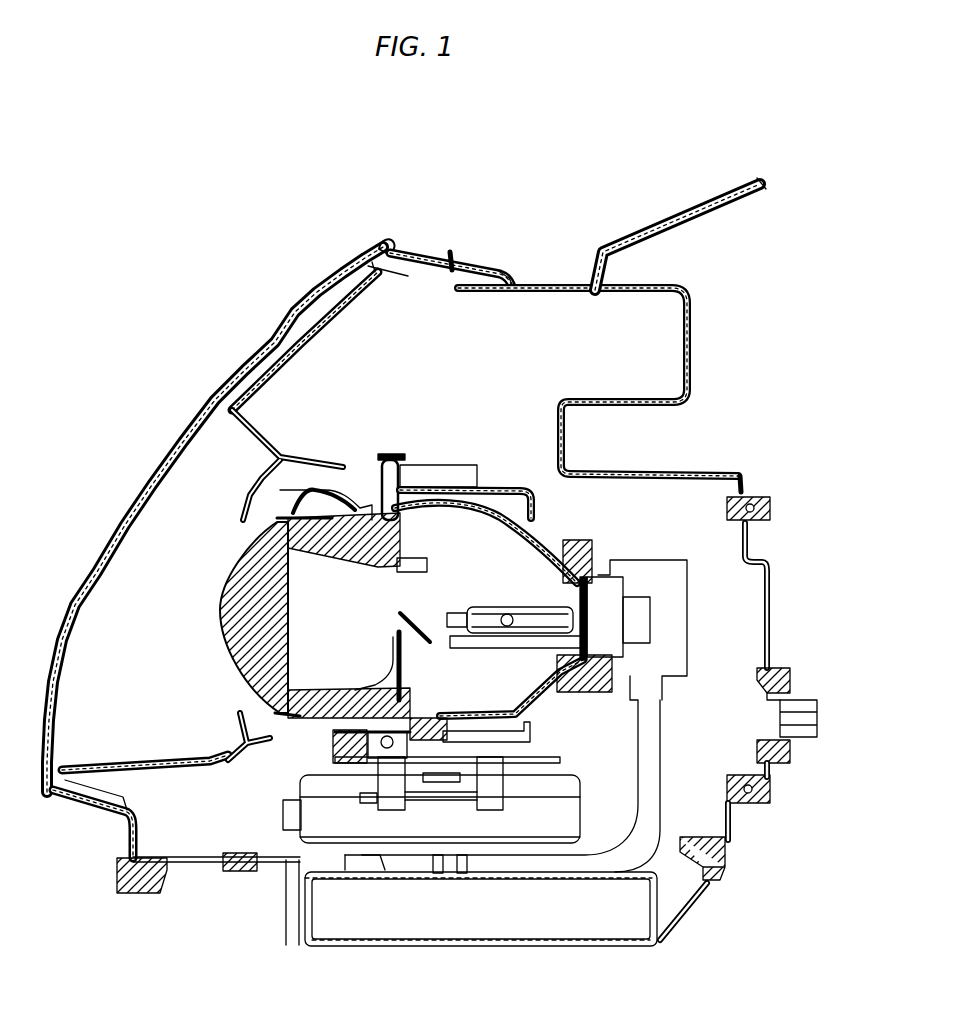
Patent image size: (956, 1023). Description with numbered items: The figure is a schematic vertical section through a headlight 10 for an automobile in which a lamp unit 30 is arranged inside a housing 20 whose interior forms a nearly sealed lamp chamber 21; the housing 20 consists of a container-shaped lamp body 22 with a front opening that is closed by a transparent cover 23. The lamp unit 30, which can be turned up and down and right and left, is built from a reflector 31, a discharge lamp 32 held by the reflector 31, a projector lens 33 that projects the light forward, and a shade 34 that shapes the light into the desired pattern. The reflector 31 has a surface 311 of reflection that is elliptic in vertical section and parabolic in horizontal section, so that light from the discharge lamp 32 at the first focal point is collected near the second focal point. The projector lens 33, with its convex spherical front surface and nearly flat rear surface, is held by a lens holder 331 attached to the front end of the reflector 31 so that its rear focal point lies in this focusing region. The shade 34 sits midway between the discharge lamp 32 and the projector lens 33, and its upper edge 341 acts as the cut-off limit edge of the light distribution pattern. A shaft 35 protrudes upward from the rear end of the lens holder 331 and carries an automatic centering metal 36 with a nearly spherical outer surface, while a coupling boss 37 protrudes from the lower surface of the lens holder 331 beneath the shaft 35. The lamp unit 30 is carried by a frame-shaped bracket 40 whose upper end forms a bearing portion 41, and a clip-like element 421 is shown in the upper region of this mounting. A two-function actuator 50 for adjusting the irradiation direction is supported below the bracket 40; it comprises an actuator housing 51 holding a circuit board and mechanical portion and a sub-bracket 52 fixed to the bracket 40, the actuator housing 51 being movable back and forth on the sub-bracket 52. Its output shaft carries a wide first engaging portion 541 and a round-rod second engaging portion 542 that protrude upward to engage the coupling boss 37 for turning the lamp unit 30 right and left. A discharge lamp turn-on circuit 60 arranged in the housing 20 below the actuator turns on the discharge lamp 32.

The headlight 10 is at (110, 268).
The housing 20 is at (420, 262).
The lamp chamber 21 is at (515, 330).
The lamp body 22 is at (700, 340).
The transparent cover 23 is at (265, 345).
The lamp unit 30 is at (507, 478).
The reflector 31 is at (530, 532).
The discharge lamp 32 is at (507, 616).
The projector lens 33 is at (230, 625).
The lens holder 331 is at (262, 482).
The surface of reflection 311 is at (470, 513).
The shade 34 is at (413, 643).
The upper edge 341 is at (400, 613).
The shaft 35 is at (396, 490).
The automatic centering metal 36 is at (367, 487).
The coupling boss 37 is at (335, 745).
The bracket 40 is at (530, 731).
The bearing portion 41 is at (430, 495).
The pivot pin 421 is at (390, 462).
The two-function actuator 50 is at (272, 803).
The actuator housing 51 is at (425, 828).
The sub-bracket 52 is at (560, 760).
The first engaging portion 541 is at (375, 760).
The second engaging portion 542 is at (365, 712).
The discharge lamp turn-on circuit 60 is at (528, 905).